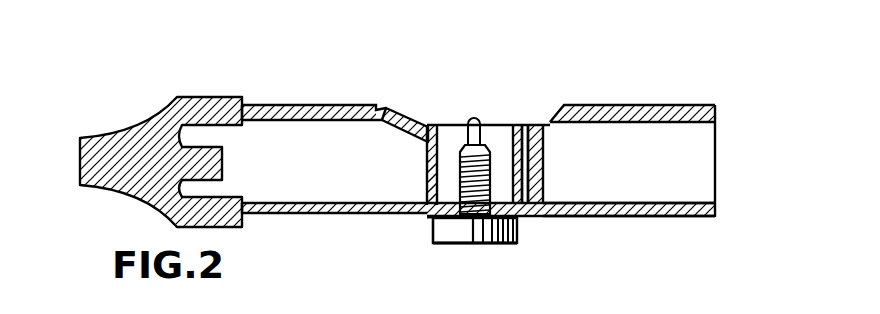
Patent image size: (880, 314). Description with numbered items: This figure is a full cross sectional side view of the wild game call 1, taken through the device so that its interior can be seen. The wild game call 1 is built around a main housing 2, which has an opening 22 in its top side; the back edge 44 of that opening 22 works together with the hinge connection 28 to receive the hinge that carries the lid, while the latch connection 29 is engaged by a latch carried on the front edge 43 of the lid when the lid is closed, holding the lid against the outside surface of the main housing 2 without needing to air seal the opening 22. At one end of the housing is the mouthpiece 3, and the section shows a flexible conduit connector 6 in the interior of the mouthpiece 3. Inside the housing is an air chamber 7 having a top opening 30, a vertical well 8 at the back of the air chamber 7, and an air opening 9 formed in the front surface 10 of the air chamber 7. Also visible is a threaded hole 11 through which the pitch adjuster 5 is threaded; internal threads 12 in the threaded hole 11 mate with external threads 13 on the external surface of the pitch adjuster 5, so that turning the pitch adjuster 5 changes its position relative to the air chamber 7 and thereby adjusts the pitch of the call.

The wild game call 1 is at (692, 86).
The main housing 2 is at (702, 157).
The mouthpiece 3 is at (193, 104).
The pitch adjuster 5 is at (478, 252).
The flexible conduit connector 6 is at (236, 135).
The air chamber 7 is at (525, 125).
The vertical well 8 is at (543, 172).
The air opening 9 is at (430, 186).
The front surface 10 is at (363, 105).
The threaded hole 11 is at (422, 219).
The internal threads 12 is at (528, 219).
The external threads 13 is at (458, 189).
The opening 22 is at (541, 124).
The hinge connection 28 is at (577, 106).
The latch connection 29 is at (383, 106).
The top opening 30 is at (507, 122).
The front edge 43 is at (393, 108).
The back edge 44 is at (563, 105).